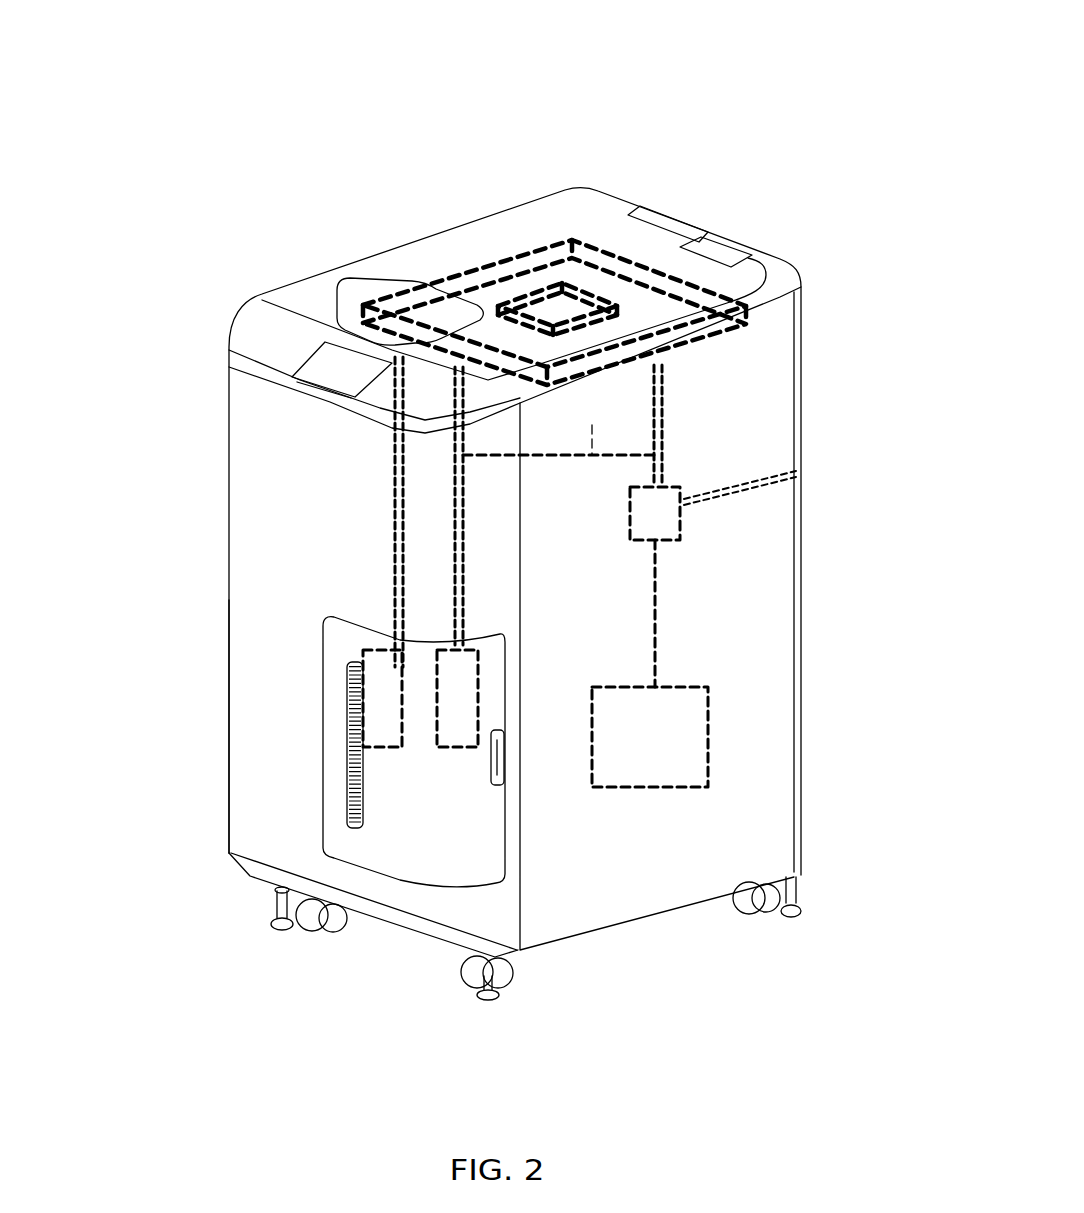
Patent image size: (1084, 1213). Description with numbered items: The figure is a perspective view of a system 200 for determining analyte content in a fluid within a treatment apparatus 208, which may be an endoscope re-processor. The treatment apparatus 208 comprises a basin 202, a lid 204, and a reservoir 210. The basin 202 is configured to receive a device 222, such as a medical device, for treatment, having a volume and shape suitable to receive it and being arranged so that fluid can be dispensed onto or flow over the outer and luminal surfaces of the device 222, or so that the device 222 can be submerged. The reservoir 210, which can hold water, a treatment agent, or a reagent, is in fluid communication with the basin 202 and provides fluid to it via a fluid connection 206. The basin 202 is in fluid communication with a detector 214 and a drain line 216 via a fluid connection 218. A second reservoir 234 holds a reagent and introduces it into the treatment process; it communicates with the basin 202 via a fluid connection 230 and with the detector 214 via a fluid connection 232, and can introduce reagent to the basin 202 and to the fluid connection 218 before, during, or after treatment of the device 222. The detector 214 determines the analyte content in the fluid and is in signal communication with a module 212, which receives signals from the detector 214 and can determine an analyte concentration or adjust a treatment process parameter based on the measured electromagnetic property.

The system 200 is at (553, 97).
The basin 202 is at (487, 283).
The lid 204 is at (377, 270).
The fluid connection 206 is at (393, 462).
The treatment apparatus 208 is at (229, 752).
The reservoir 210 is at (355, 728).
The module 212 is at (712, 703).
The detector 214 is at (684, 530).
The drain line 216 is at (770, 492).
The fluid connection 218 is at (665, 387).
The device 222 is at (560, 265).
The fluid connection 230 is at (455, 539).
The fluid connection 232 is at (593, 427).
The second reservoir 234 is at (450, 753).